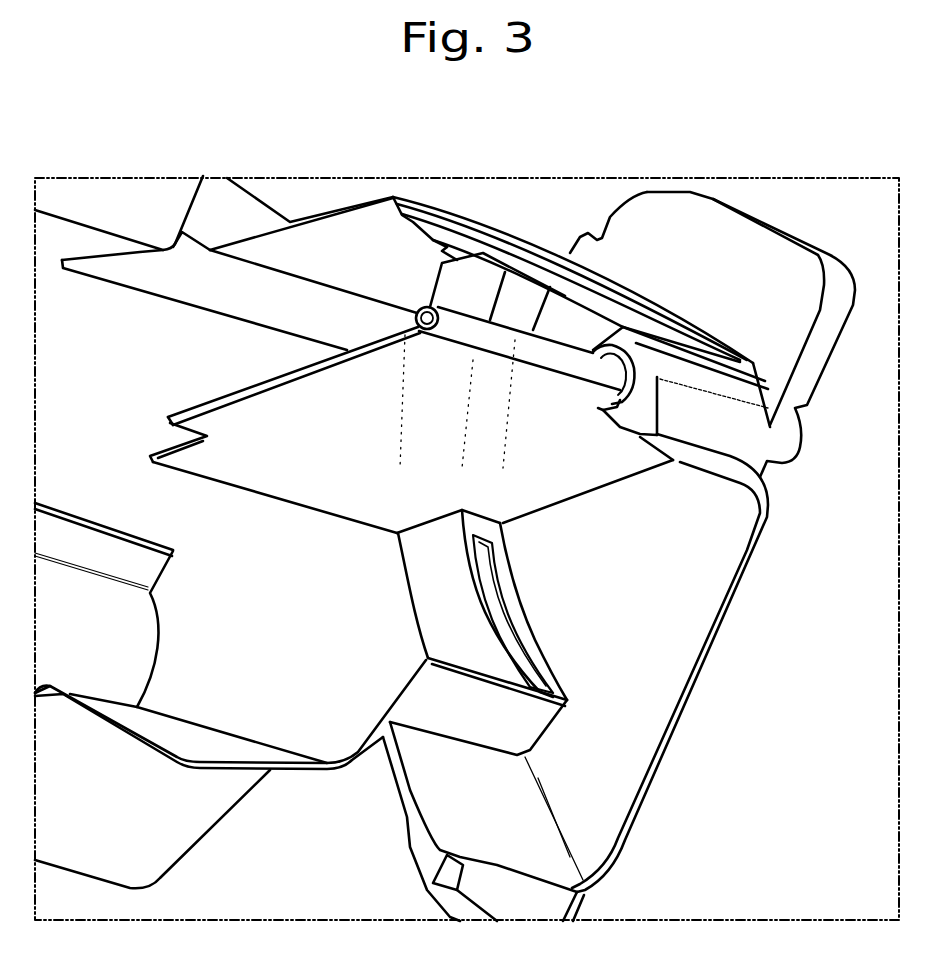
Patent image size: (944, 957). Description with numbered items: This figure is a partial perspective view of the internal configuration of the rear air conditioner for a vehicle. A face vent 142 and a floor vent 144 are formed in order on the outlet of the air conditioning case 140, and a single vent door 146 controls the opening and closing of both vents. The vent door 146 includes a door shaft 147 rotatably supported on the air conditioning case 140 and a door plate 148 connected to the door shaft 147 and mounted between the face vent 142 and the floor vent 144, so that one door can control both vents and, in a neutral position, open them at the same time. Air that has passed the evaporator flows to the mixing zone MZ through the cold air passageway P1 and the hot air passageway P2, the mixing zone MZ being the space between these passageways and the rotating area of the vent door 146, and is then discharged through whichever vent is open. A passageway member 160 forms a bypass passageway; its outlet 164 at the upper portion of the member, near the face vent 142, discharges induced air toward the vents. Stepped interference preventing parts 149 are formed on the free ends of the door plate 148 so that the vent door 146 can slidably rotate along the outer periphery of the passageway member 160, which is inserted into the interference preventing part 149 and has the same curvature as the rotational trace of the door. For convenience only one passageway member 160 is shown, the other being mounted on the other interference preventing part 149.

The air conditioning case 140 is at (700, 185).
The face vent 142 is at (438, 248).
The floor vent 144 is at (663, 578).
The vent door 146 is at (172, 403).
The door shaft 147 is at (415, 311).
The door plate 148 is at (287, 396).
The interference preventing part 149 is at (167, 444).
The passageway member 160 is at (398, 587).
The outlet 164 is at (507, 633).
The cold air passageway P1 is at (73, 490).
The hot air passageway P2 is at (78, 670).
The mixing zone MZ is at (234, 531).